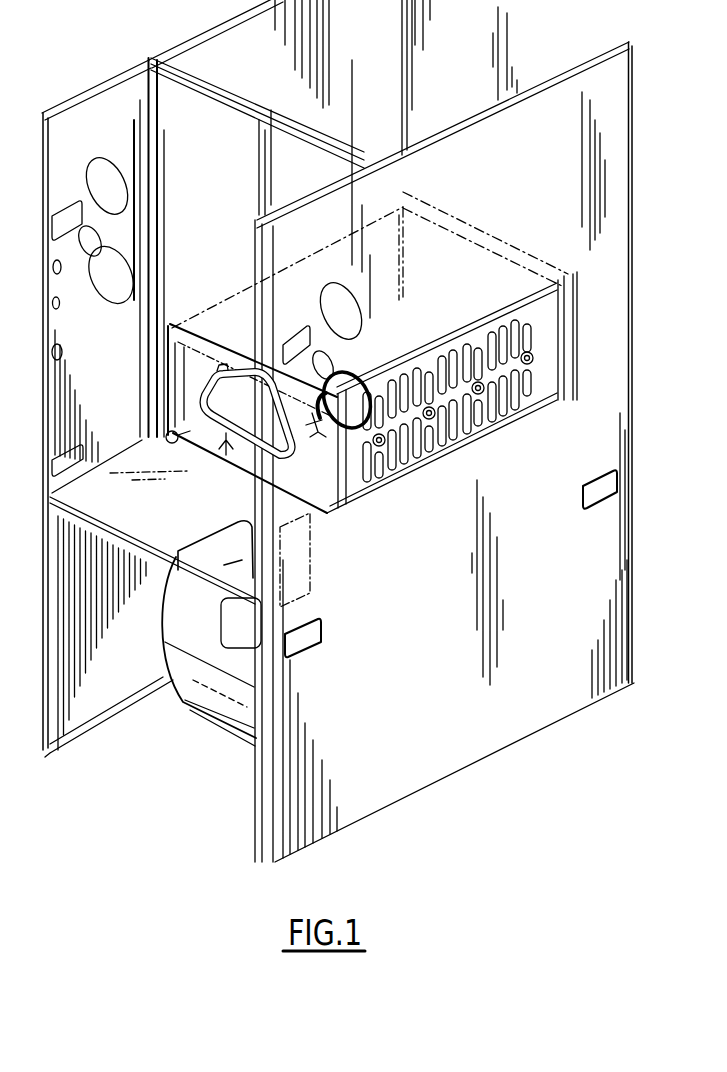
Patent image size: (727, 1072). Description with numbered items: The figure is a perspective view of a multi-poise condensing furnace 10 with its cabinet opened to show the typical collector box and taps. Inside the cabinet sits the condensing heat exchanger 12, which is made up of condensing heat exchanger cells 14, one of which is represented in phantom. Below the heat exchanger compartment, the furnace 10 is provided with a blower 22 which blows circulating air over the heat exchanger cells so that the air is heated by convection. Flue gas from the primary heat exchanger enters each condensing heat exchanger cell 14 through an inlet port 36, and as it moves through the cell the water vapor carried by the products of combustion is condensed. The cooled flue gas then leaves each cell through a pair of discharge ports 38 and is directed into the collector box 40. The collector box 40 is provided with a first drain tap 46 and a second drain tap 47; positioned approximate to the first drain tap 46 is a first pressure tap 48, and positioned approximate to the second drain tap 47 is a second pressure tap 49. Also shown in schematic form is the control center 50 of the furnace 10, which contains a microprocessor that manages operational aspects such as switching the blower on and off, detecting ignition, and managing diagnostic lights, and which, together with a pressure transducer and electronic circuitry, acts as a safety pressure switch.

The multi-poise condensing furnace 10 is at (697, 356).
The condensing heat exchanger 12 is at (471, 260).
The condensing heat exchanger cell 14 is at (454, 437).
The blower 22 is at (237, 733).
The inlet port 36 is at (544, 350).
The discharge port 38 is at (350, 490).
The collector box 40 is at (325, 505).
The first drain tap 46 is at (172, 444).
The second drain tap 47 is at (323, 440).
The first pressure tap 48 is at (207, 440).
The second pressure tap 49 is at (330, 427).
The control center 50 is at (310, 591).